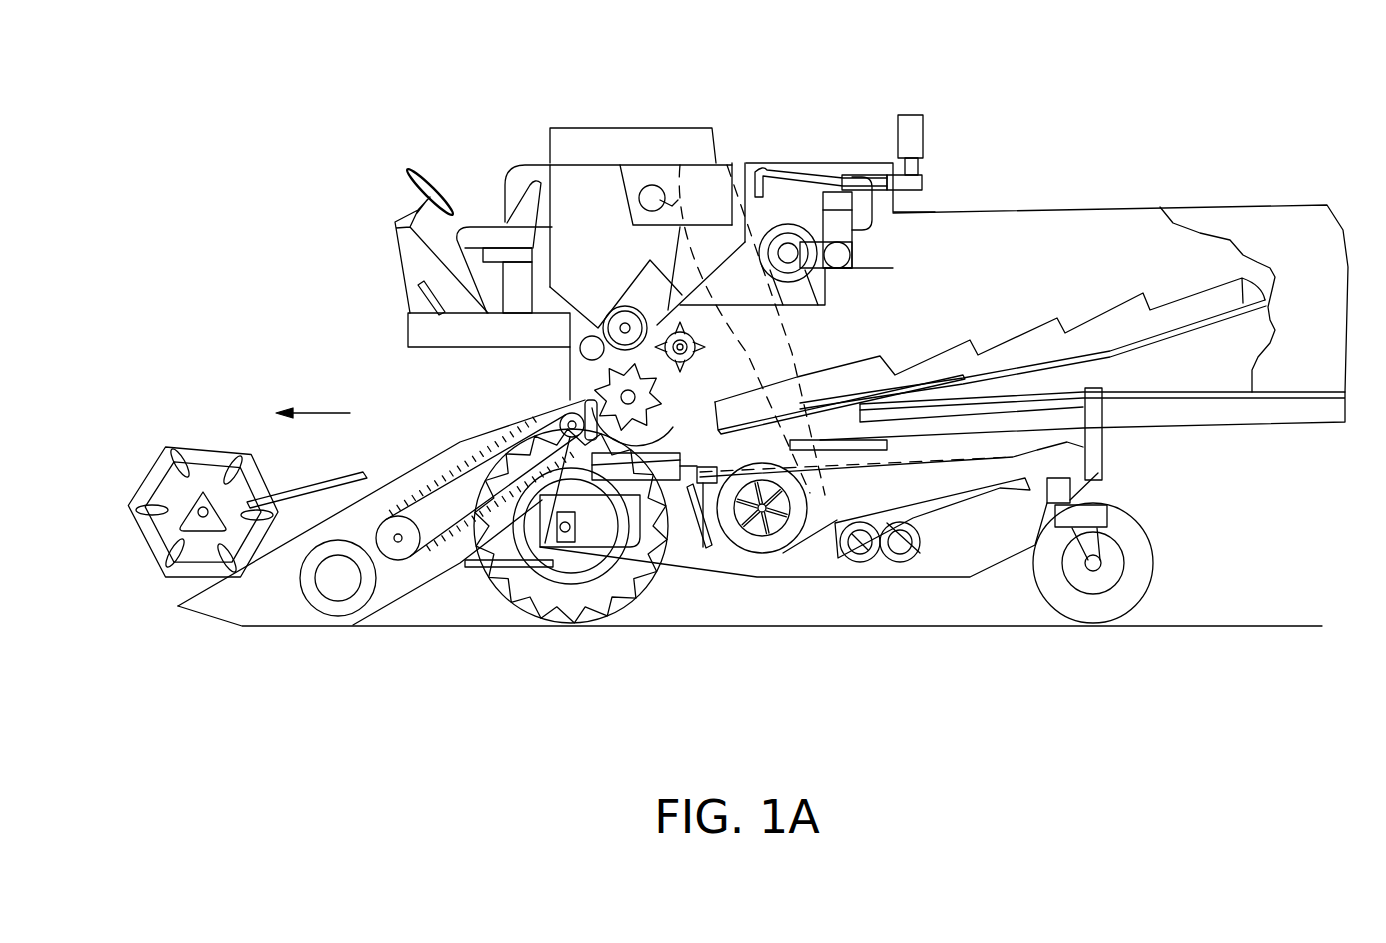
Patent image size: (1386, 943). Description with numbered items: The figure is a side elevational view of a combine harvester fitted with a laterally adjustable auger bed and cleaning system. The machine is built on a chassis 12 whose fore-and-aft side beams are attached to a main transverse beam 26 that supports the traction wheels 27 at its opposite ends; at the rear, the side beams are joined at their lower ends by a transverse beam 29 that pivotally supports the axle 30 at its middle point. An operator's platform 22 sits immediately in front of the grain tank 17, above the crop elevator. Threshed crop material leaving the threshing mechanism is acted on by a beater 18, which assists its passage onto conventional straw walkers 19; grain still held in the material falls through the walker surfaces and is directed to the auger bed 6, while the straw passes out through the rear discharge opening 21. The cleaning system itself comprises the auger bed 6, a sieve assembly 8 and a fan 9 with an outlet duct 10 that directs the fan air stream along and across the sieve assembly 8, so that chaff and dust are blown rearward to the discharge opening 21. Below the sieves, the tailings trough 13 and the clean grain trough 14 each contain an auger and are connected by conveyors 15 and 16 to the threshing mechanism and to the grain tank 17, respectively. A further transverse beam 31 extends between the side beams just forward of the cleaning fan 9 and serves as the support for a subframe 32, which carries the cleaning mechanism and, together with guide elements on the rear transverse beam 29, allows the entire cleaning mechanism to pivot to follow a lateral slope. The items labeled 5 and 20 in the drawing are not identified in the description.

The grain pan 5 is at (688, 478).
The auger bed 6 is at (704, 500).
The sieve assembly 8 is at (990, 470).
The fan 9 is at (790, 548).
The outlet duct 10 is at (815, 545).
The combine harvester chassis 12 is at (580, 525).
The tailings trough 13 is at (893, 552).
The clean grain trough 14 is at (875, 557).
The conveyor 15 is at (680, 227).
The conveyor 16 is at (783, 333).
The grain tank 17 is at (582, 165).
The beater 18 is at (700, 330).
The straw walkers 19 is at (1100, 307).
The direction of travel 20 is at (313, 395).
The rear discharge opening 21 is at (1285, 415).
The operator's platform 22 is at (417, 303).
The main transverse beam 26 is at (518, 603).
The traction wheels 27 is at (633, 548).
The transverse beam 29 is at (1062, 492).
The axle 30 is at (1138, 568).
The further transverse beam 31 is at (694, 492).
The subframe 32 is at (752, 560).